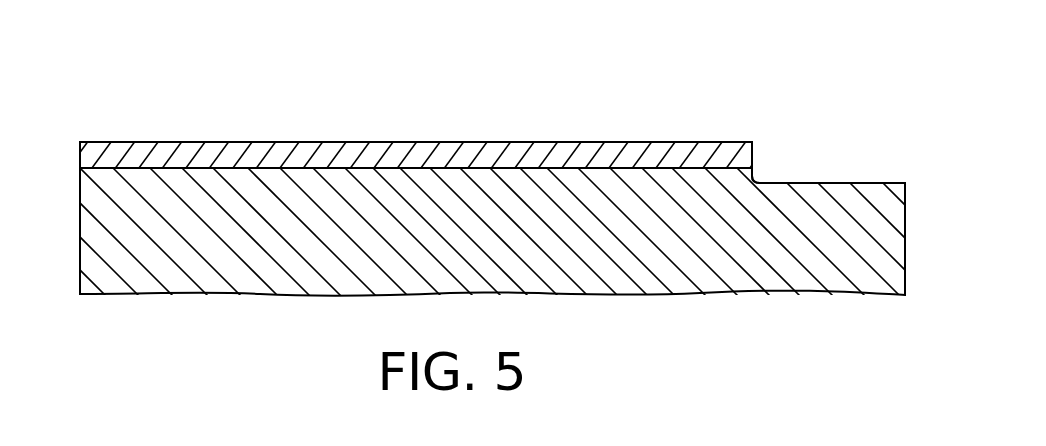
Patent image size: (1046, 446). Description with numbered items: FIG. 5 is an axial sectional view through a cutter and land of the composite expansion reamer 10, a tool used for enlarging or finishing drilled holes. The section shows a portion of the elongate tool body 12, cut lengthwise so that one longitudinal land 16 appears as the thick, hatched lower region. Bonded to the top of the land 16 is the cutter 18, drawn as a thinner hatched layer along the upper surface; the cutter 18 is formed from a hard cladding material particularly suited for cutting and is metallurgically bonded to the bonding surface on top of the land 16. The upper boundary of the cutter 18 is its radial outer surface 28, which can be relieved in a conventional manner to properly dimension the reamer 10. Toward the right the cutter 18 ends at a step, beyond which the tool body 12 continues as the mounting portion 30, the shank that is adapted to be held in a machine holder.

The composite expansion reamer 10 is at (504, 196).
The tool body 12 is at (776, 180).
The land 16 is at (100, 170).
The cutter 18 is at (80, 152).
The radial outer surface 28 is at (272, 141).
The mounting portion 30 is at (853, 200).